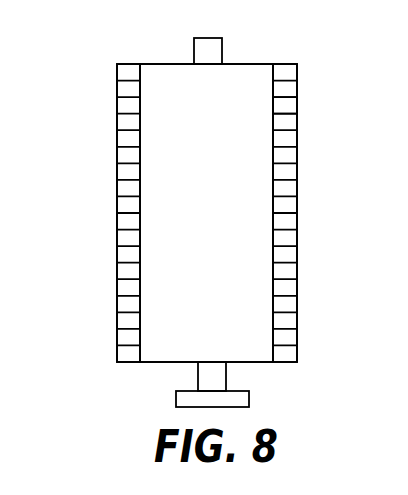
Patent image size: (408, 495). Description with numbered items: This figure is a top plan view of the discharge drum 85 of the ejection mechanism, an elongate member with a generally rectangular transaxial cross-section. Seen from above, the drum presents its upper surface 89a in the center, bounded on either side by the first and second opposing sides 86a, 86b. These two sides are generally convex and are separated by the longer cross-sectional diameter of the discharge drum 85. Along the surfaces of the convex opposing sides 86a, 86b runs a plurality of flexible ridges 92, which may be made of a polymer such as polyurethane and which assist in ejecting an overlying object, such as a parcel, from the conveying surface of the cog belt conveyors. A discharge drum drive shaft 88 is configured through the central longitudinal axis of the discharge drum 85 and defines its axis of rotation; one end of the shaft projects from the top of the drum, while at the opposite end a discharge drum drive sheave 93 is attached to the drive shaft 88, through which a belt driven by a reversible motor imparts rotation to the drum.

The discharge drum 85 is at (153, 47).
The discharge drum drive shaft 88 is at (222, 41).
The flexible ridges 92 is at (297, 103).
The upper surface 89a is at (224, 212).
The first opposing side 86a is at (118, 238).
The second opposing side 86b is at (297, 233).
The discharge drum drive sheave 93 is at (249, 397).